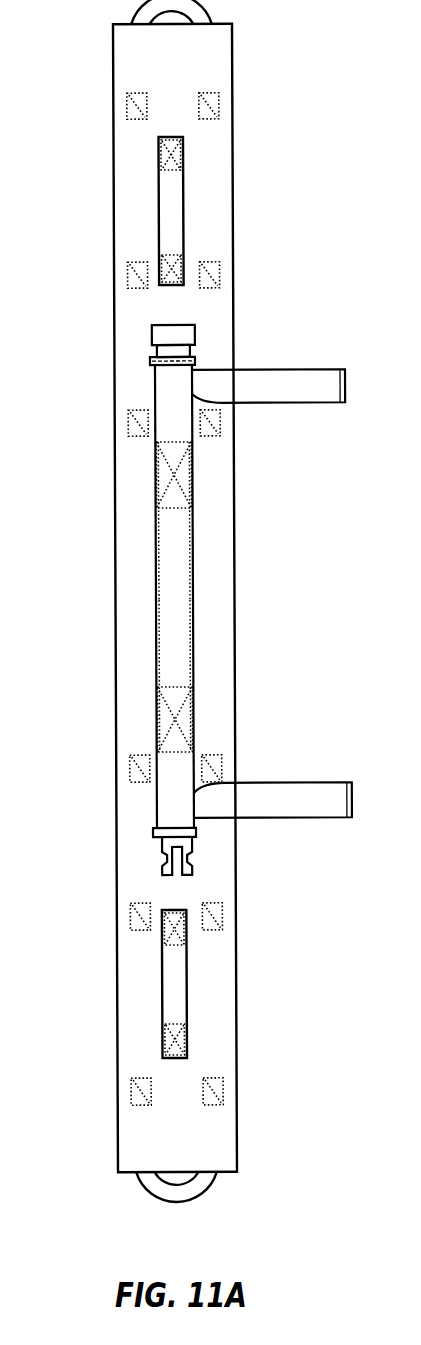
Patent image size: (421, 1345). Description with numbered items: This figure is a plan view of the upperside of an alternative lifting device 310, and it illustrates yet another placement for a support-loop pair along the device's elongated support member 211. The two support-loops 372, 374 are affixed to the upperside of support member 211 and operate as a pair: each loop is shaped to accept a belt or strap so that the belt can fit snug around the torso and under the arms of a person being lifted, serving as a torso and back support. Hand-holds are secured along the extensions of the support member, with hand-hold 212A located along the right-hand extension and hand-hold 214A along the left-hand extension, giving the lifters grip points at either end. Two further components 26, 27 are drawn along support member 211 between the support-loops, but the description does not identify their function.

The device 310 is at (233, 608).
The support member 211 is at (213, 140).
The hand-hold 212A is at (207, 5).
The hand-hold 214A is at (200, 1185).
The support-loop 372 is at (172, 202).
The support-loop 374 is at (175, 978).
The first connector 26 is at (165, 382).
The second connector 27 is at (165, 800).